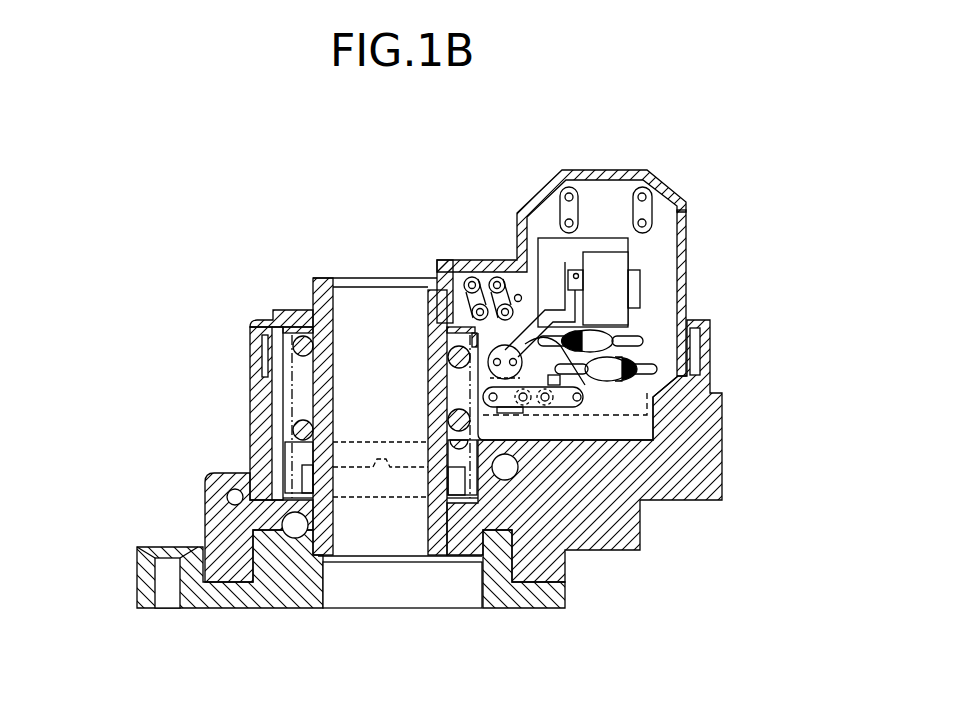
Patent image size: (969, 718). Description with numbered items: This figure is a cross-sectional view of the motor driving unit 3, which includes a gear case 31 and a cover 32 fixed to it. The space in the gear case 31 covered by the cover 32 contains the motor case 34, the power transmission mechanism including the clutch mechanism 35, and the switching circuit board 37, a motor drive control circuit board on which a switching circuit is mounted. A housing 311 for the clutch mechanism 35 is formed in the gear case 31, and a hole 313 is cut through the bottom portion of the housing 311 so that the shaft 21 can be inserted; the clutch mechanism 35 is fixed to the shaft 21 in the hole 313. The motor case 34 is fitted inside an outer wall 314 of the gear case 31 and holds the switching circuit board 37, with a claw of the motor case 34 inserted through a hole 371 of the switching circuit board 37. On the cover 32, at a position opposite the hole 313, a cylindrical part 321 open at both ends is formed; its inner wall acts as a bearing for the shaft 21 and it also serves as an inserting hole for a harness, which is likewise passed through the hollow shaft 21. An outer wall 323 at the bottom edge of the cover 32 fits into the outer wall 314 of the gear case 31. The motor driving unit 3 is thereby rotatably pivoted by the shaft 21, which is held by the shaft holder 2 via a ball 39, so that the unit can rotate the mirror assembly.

The shaft holder 2 is at (137, 579).
The motor driving unit 3 is at (355, 211).
The shaft 21 is at (410, 523).
The gear case 31 is at (249, 393).
The housing 311 is at (283, 415).
The hole 313 is at (337, 523).
The outer wall 314 is at (264, 356).
The cover 32 is at (675, 202).
The cylindrical part 321 is at (314, 291).
The outer wall 323 is at (250, 326).
The motor case 34 is at (488, 500).
The clutch mechanism 35 is at (287, 455).
The switching circuit board 37 is at (682, 202).
The hole 371 is at (562, 377).
The ball 39 is at (282, 522).